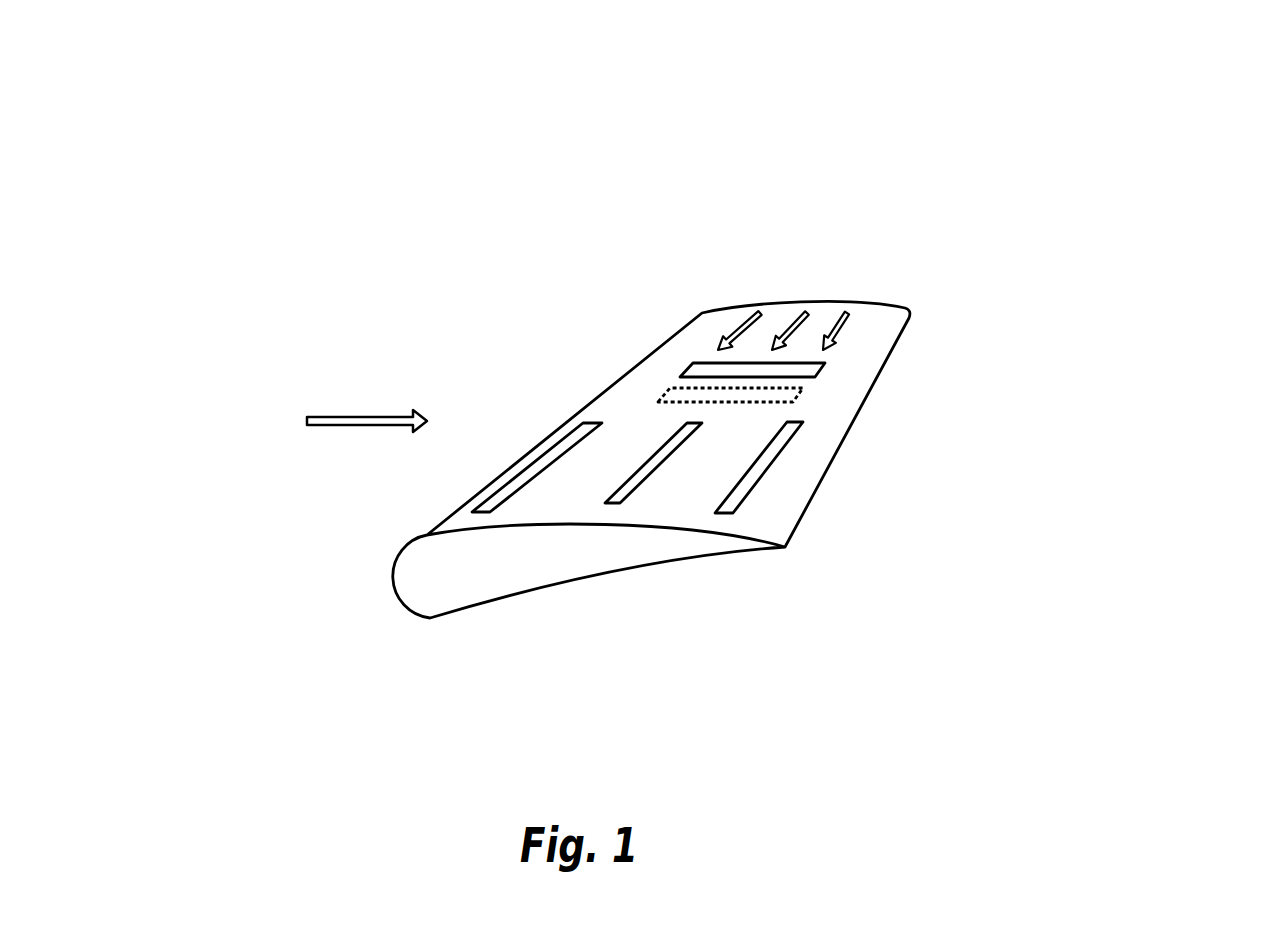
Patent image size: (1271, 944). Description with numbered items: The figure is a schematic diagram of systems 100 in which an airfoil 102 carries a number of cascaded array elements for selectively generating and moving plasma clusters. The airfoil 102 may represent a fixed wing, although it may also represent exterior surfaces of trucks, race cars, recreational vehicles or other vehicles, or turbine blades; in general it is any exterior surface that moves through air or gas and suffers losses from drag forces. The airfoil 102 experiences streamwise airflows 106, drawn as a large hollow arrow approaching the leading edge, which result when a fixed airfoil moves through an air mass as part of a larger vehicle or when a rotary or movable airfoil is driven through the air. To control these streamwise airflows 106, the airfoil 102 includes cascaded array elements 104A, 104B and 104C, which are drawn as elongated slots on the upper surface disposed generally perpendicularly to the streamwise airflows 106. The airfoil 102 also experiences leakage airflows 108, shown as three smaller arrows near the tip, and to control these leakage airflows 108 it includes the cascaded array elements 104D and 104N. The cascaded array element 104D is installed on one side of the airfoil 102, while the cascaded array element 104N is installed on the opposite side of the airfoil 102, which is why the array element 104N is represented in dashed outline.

The systems 100 is at (1112, 108).
The airfoil 102 is at (447, 580).
The cascaded array element 104A is at (750, 500).
The cascaded array element 104B is at (630, 498).
The cascaded array element 104C is at (555, 443).
The cascaded array element 104D is at (832, 372).
The cascaded array element 104N is at (805, 405).
The streamwise airflows 106 is at (353, 407).
The leakage airflows 108 is at (845, 335).